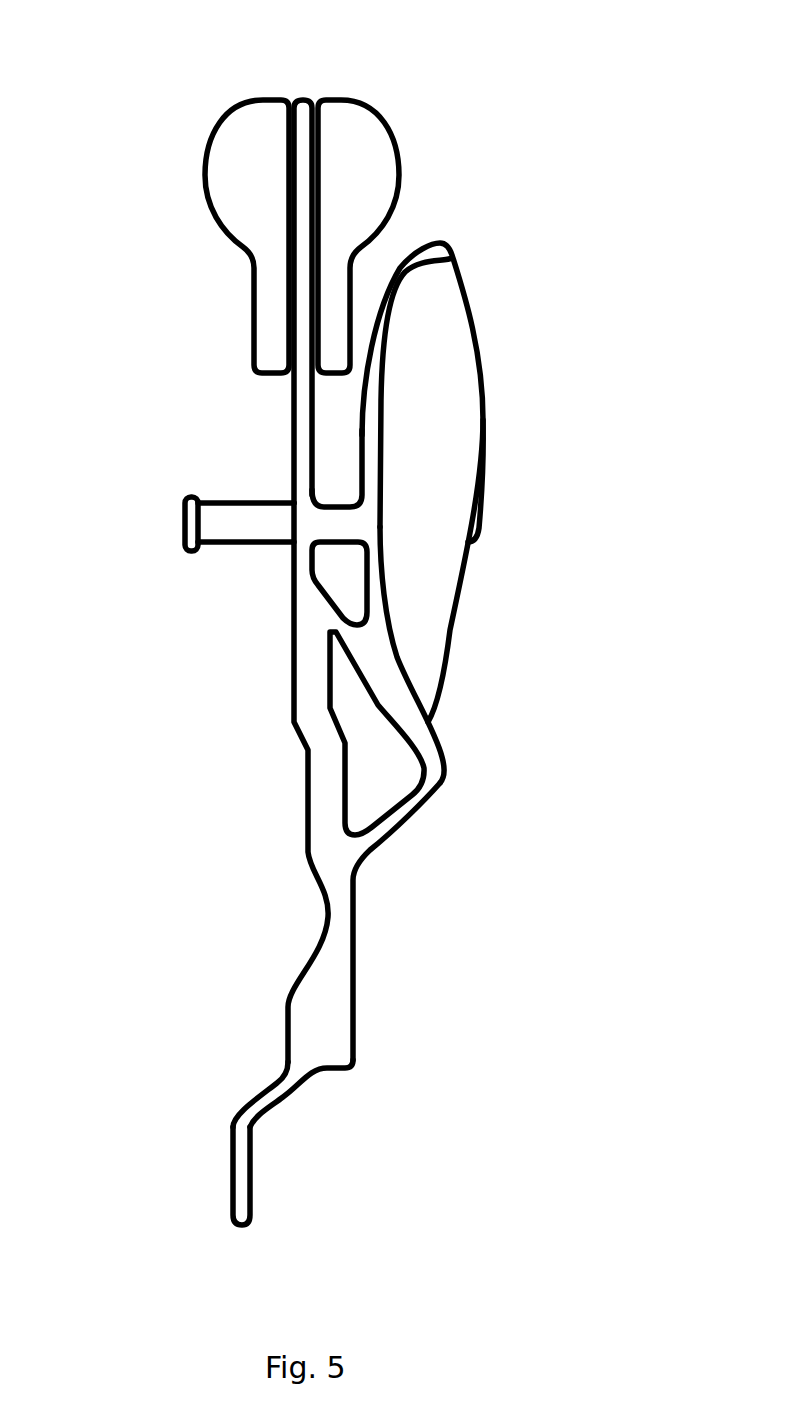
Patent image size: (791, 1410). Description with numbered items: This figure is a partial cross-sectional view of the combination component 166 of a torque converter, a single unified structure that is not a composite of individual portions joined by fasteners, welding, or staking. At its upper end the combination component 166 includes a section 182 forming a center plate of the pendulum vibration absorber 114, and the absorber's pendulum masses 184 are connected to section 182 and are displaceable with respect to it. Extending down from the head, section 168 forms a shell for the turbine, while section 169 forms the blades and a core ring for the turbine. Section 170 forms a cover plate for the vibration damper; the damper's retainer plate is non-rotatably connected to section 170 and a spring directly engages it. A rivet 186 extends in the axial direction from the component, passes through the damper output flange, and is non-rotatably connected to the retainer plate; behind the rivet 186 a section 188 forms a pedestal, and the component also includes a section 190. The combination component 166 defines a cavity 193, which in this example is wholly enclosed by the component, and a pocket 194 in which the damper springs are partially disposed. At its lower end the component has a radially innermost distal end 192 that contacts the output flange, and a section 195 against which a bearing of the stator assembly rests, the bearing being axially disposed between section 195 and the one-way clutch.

The vibration absorber 114 is at (347, 88).
The combination component 166 is at (560, 135).
The section 168 is at (385, 408).
The section 169 is at (450, 340).
The section 170 is at (312, 960).
The section 182 is at (301, 98).
The pendulum masses 184 is at (215, 140).
The rivet 186 is at (235, 503).
The section 188 is at (340, 525).
The section 190 is at (340, 630).
The radially innermost distal end 192 is at (245, 1240).
The cavity 193 is at (335, 582).
The pocket 194 is at (378, 787).
The section 195 is at (330, 1040).